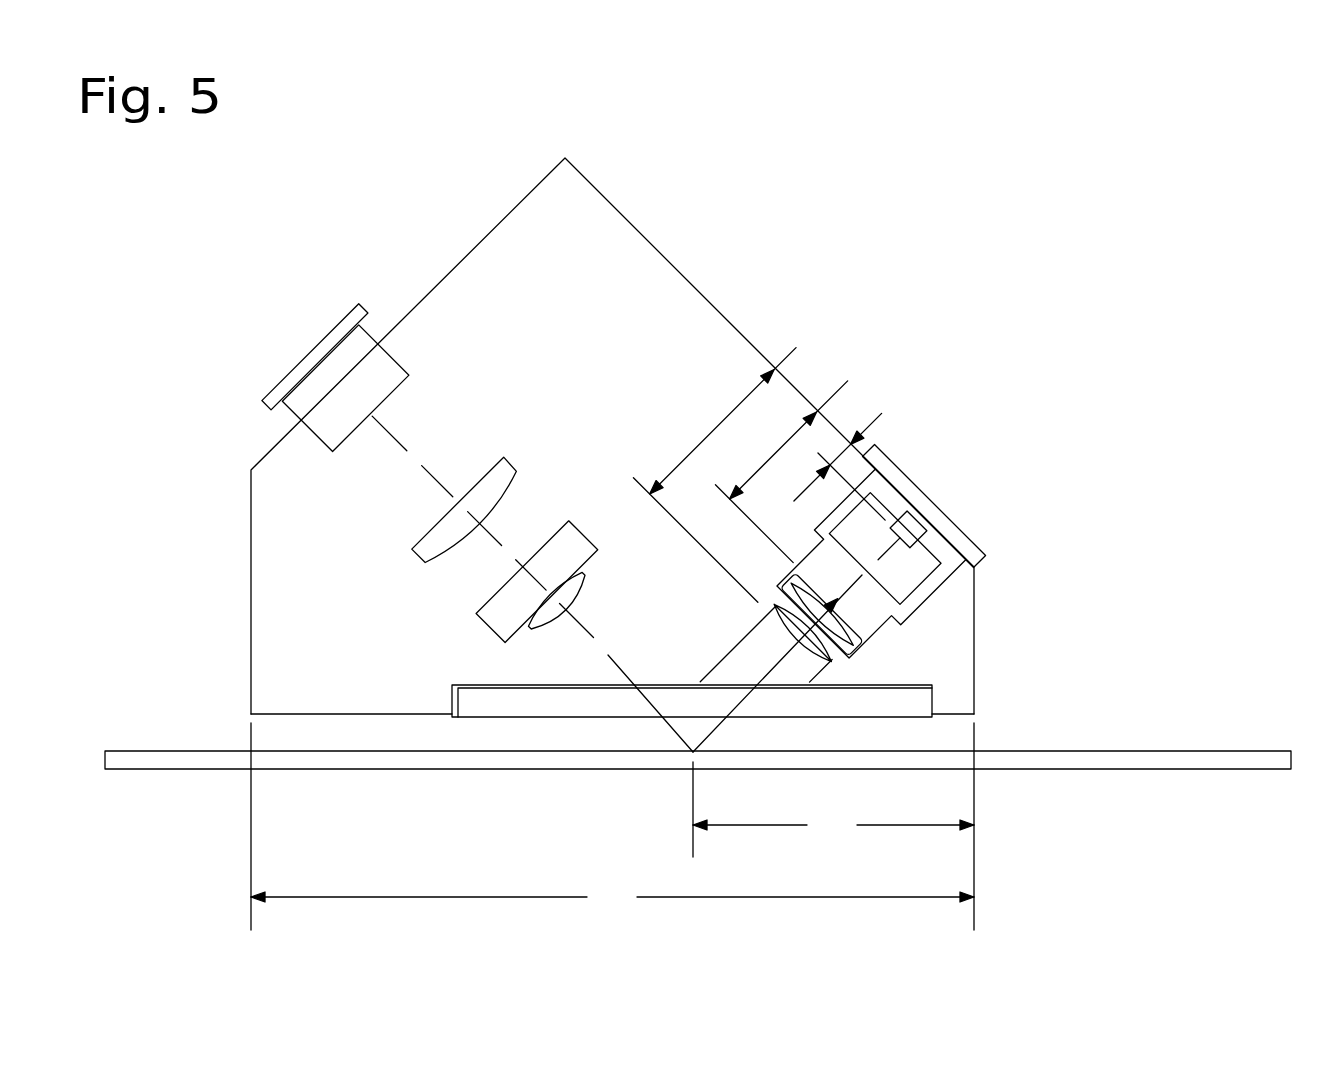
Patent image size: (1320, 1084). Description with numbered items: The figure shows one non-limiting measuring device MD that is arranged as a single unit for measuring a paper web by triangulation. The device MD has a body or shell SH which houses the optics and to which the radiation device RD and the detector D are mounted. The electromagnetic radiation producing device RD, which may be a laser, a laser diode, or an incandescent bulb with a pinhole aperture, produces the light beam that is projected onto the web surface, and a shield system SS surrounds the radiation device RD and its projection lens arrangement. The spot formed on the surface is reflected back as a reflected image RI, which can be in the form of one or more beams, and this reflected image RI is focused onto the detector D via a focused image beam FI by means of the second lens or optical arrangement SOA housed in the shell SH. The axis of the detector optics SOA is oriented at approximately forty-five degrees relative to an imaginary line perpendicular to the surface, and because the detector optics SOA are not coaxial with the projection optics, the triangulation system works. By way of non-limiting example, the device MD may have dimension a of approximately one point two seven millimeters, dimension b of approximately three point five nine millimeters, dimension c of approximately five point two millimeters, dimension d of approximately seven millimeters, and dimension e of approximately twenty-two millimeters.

The measuring device MD is at (737, 207).
The body or shell SH is at (512, 210).
The detector D is at (290, 367).
The focused image beam FI is at (452, 452).
The second lens or optical arrangement SOA is at (423, 608).
The reflected image RI is at (576, 655).
The shield system SS is at (733, 643).
The electromagnetic radiation producing device RD is at (998, 527).
The dimension a is at (882, 413).
The dimension b is at (848, 381).
The dimension c is at (796, 348).
The dimension d is at (833, 826).
The dimension e is at (612, 826).